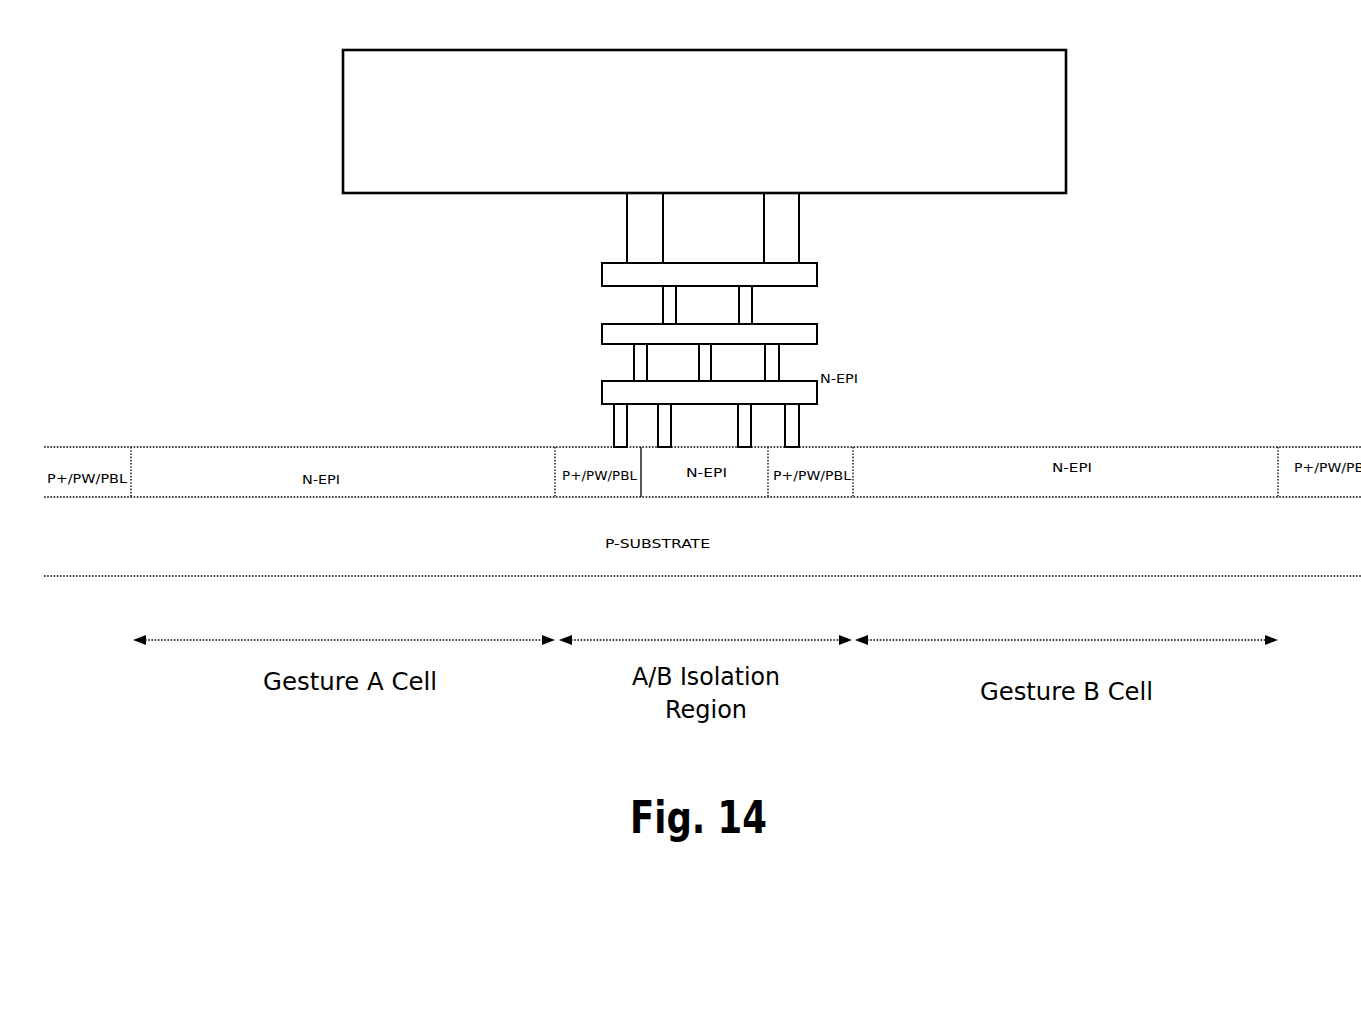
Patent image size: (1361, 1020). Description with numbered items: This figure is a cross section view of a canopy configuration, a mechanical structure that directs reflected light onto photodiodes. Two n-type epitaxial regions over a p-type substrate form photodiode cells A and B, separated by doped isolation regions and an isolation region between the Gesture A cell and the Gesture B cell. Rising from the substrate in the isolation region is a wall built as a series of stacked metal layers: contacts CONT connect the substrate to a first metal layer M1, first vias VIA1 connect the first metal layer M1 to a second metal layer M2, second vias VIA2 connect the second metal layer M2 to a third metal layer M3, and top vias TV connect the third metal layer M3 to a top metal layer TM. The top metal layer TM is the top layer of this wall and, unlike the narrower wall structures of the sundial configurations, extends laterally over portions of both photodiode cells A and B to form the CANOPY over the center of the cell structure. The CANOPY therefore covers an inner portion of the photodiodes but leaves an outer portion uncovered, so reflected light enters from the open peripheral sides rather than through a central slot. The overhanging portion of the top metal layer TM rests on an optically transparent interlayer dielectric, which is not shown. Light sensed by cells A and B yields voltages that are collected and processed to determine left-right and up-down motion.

The top metal layer TM is at (704, 121).
The canopy CANOPY is at (684, 23).
The top via TV is at (713, 228).
The metal 3 layer M3 is at (709, 274).
The metal 2 layer M2 is at (709, 334).
The metal 1 layer M1 is at (709, 392).
The via 2 VIA2 is at (656, 305).
The via 1 VIA1 is at (669, 362).
The contact CONT is at (677, 425).